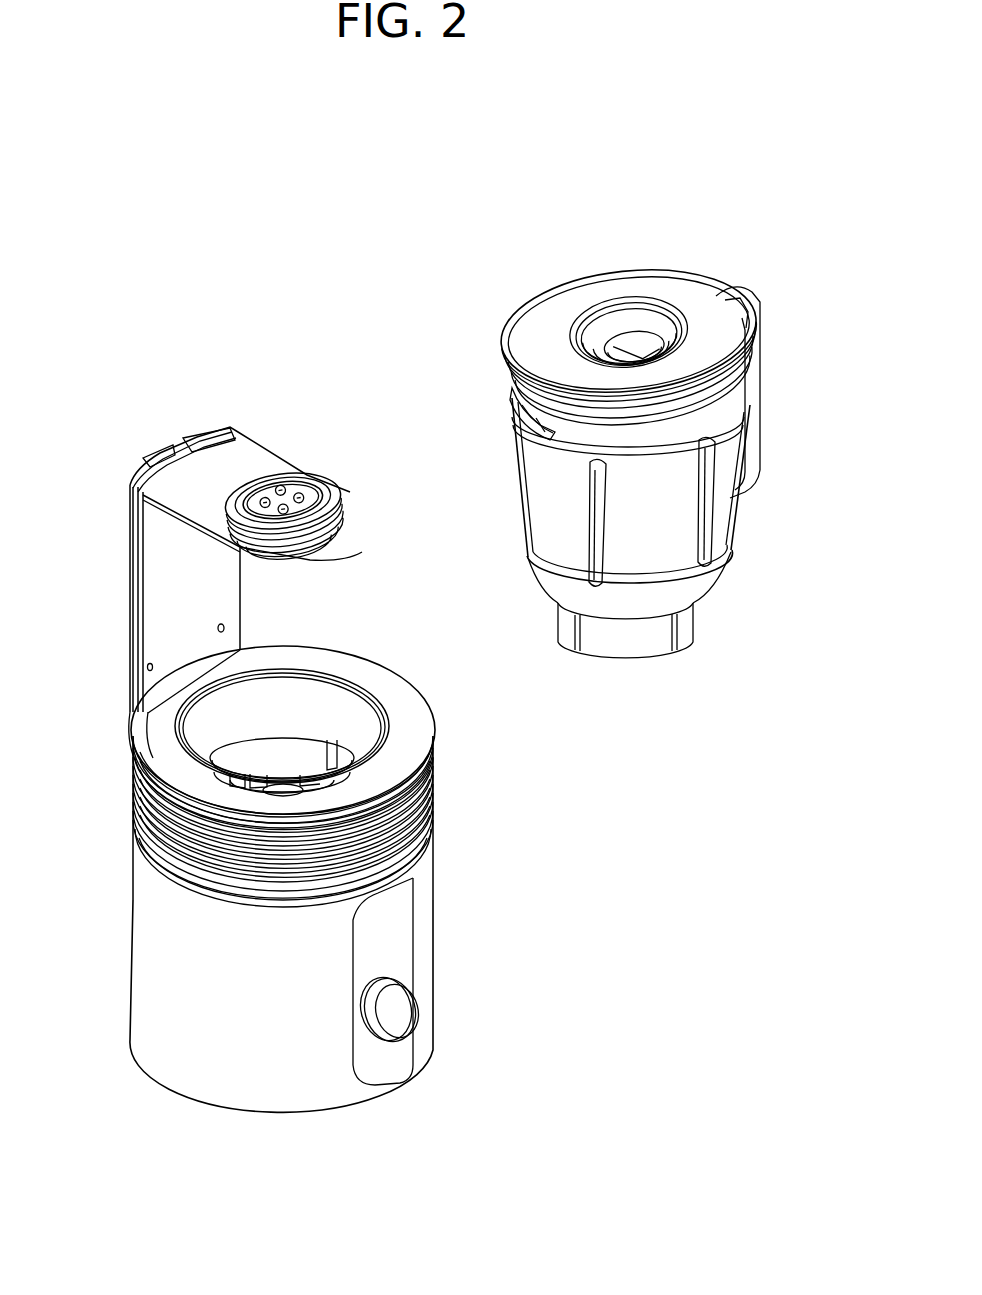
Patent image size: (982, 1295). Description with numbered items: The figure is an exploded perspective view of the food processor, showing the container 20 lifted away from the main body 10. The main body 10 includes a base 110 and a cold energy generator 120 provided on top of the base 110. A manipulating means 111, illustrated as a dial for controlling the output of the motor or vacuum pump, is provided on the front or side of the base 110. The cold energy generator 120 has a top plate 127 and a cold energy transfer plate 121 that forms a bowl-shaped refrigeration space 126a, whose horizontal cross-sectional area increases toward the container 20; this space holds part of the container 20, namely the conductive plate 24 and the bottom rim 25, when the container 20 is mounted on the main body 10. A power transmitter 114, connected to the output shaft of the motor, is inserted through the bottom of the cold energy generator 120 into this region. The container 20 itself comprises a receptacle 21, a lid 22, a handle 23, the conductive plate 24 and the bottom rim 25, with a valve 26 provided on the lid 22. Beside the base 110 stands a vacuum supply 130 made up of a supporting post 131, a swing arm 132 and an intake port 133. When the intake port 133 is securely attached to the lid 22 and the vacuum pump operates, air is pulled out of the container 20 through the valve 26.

The main body 10 is at (548, 780).
The container 20 is at (476, 262).
The receptacle 21 is at (727, 507).
The lid 22 is at (588, 288).
The handle 23 is at (758, 380).
The conductive plate 24 is at (701, 592).
The bottom rim 25 is at (691, 622).
The valve 26 is at (634, 336).
The base 110 is at (430, 940).
The manipulating means 111 is at (400, 1013).
The power transmitter 114 is at (235, 746).
The cold energy generator 120 is at (436, 793).
The cold energy transfer plate 121 is at (286, 692).
The refrigeration space 126a is at (352, 715).
The top plate 127 is at (408, 722).
The vacuum supply 130 is at (148, 433).
The supporting post 131 is at (150, 592).
The swing arm 132 is at (254, 460).
The intake port 133 is at (325, 490).